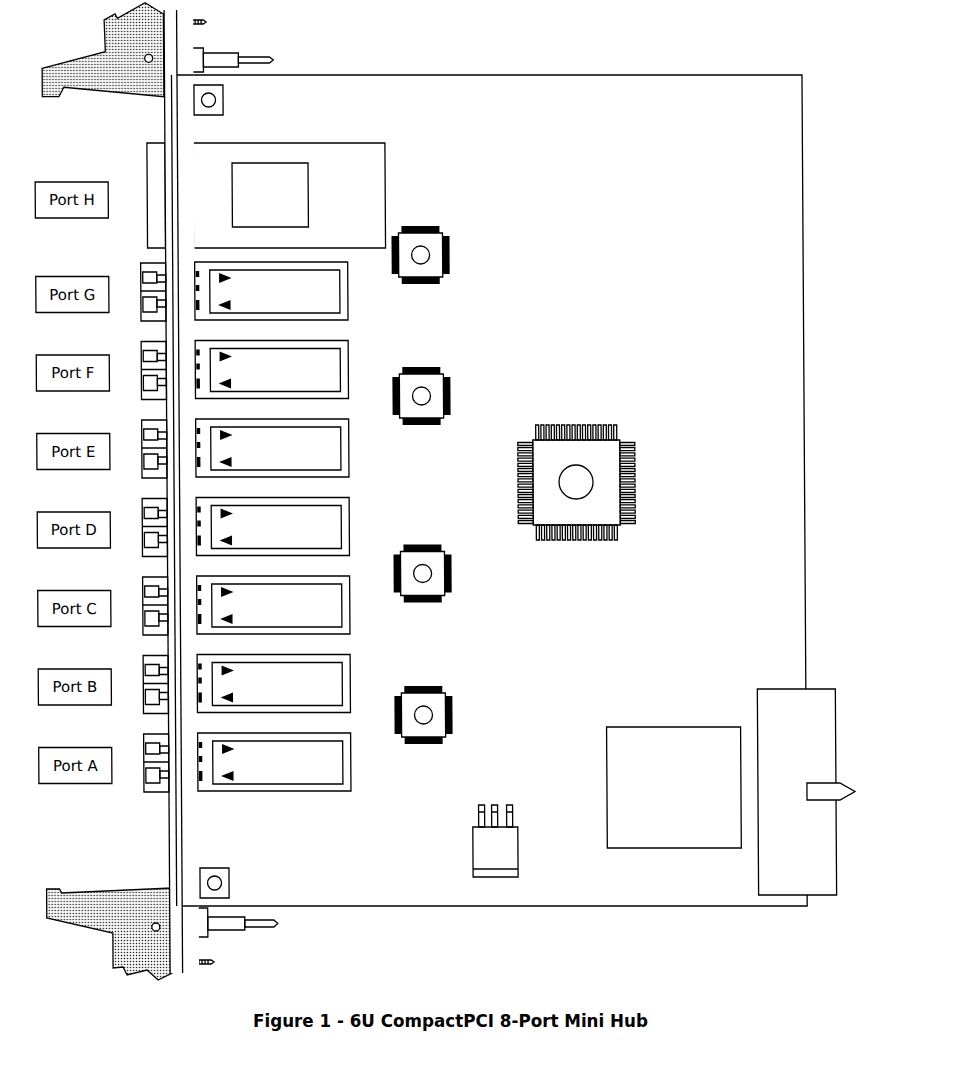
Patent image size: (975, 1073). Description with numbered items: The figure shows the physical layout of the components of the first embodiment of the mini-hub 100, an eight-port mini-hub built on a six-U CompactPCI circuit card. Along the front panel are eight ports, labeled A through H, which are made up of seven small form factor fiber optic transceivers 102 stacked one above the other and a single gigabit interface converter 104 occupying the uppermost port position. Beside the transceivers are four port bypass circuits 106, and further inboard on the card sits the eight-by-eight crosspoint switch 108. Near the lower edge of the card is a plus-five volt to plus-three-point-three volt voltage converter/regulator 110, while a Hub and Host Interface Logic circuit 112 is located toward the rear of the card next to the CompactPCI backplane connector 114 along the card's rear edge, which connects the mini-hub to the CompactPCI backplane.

The mini-hub 100 is at (676, 52).
The small form factor fiber optic transceivers 102 is at (346, 295).
The gigabit interface converter 104 is at (382, 142).
The port bypass circuits 106 is at (442, 233).
The 8x8 crosspoint switch 108 is at (620, 433).
The voltage converter/regulator 110 is at (478, 877).
The Hub and Host Interface Logic circuit 112 is at (655, 727).
The CompactPCI backplane connector 114 is at (764, 689).